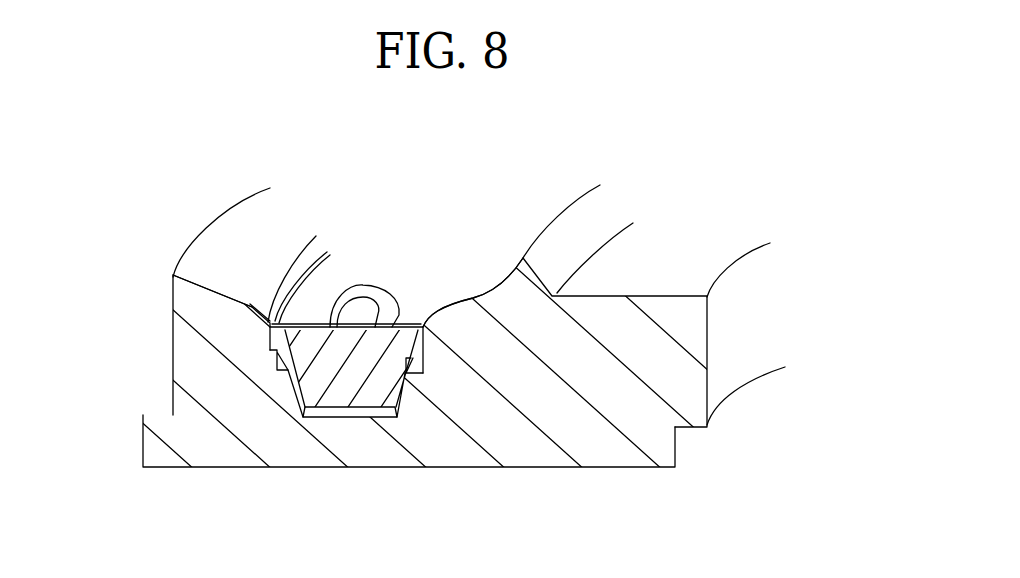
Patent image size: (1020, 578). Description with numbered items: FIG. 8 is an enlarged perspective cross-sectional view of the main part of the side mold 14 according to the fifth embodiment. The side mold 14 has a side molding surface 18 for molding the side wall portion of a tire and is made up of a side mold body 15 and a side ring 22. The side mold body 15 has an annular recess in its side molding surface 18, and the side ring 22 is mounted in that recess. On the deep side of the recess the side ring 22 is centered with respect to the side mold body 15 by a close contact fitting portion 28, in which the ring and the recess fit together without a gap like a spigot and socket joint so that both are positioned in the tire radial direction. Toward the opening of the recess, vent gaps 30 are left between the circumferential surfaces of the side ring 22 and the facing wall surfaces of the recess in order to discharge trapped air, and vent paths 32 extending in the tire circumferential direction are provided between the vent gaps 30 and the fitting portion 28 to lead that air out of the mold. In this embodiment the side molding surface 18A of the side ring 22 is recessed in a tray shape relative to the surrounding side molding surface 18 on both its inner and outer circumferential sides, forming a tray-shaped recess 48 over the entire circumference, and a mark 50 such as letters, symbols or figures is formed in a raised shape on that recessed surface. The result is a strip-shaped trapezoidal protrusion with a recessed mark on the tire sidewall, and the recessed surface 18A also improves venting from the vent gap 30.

The side mold 14 is at (575, 144).
The side mold body 15 is at (605, 453).
The side molding surface 18 is at (210, 268).
The side molding surface of the side ring 18A is at (363, 262).
The side ring 22 is at (317, 340).
The close contact fitting portion 28 is at (303, 408).
The vent gap 30 is at (268, 340).
The vent path 32 is at (272, 366).
The tray-shaped recess 48 is at (318, 278).
The mark 50 is at (388, 287).